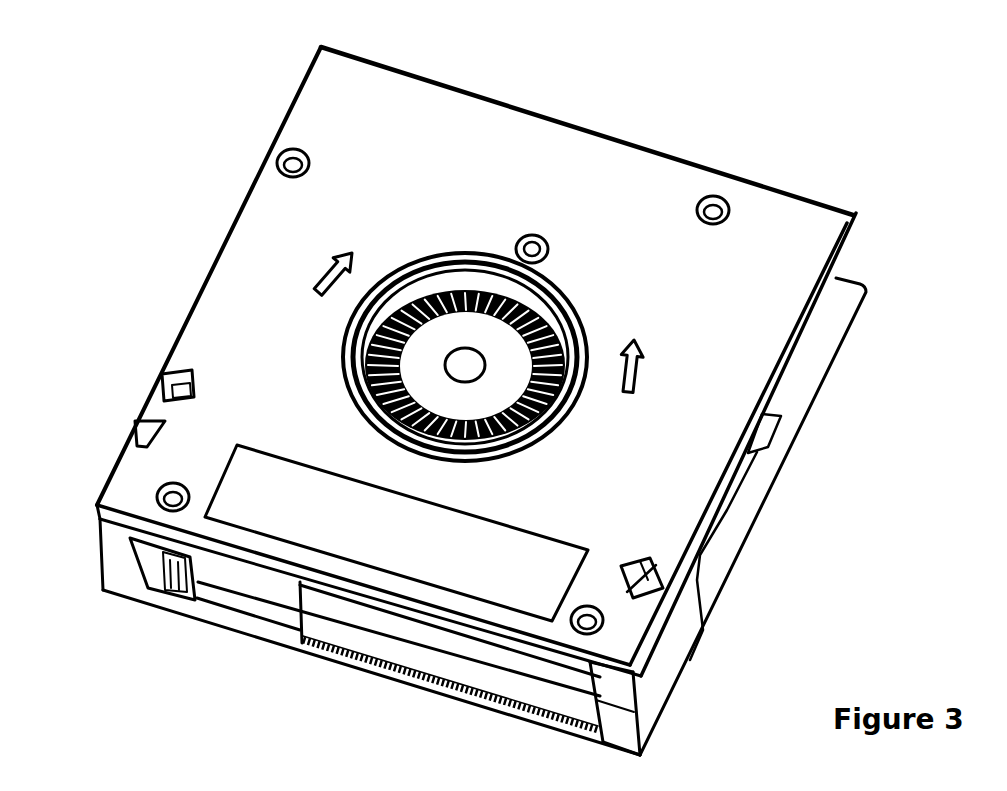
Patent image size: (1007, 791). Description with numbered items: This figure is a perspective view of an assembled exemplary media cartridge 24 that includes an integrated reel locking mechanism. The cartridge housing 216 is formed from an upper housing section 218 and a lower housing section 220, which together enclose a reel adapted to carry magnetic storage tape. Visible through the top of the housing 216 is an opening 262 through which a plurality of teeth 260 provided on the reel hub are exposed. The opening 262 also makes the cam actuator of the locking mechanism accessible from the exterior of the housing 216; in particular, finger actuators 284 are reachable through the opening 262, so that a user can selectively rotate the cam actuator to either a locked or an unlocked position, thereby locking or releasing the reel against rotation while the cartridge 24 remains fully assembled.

The cartridge 24 is at (236, 146).
The cartridge housing 216 is at (768, 310).
The upper housing section 218 is at (823, 353).
The lower housing section 220 is at (836, 277).
The teeth 260 is at (355, 397).
The opening 262 is at (322, 332).
The finger actuators 284 is at (474, 258).